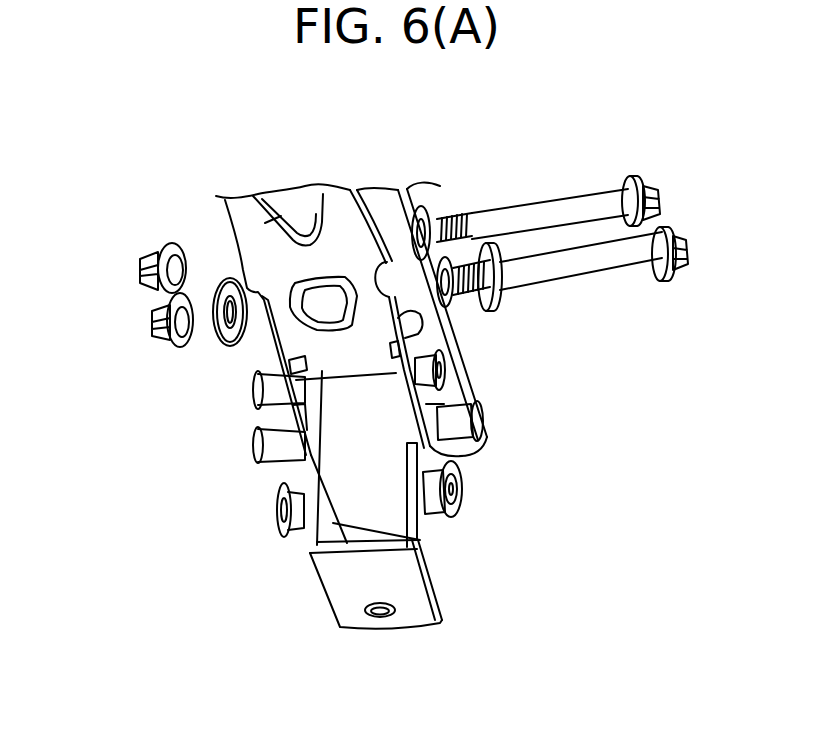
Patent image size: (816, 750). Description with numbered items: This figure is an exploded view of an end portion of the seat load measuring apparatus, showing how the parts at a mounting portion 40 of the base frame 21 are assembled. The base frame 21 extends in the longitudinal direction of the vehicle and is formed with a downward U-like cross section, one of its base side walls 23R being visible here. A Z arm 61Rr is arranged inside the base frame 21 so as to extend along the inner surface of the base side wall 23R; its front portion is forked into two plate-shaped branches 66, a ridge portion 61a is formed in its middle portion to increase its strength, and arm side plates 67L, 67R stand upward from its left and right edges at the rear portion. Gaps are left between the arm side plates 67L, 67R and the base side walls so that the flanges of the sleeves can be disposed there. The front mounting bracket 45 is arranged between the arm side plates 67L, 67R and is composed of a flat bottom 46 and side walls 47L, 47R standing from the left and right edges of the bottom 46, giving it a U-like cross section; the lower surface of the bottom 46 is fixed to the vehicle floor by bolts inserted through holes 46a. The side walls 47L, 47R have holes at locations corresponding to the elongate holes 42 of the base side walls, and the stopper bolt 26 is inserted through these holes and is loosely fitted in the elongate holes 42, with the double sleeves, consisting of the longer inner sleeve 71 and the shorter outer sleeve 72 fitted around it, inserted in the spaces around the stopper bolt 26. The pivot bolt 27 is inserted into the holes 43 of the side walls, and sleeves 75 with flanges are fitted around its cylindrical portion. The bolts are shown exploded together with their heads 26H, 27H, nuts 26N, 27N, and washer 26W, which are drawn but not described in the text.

The base frame 21 is at (438, 186).
The base side wall 23R is at (413, 200).
The stopper bolt 26 is at (616, 268).
The bolt head 26H is at (675, 240).
The nut 26N is at (150, 323).
The washer 26W is at (223, 274).
The pivot bolt 27 is at (582, 195).
The bolt head 27H is at (654, 188).
The nut 27N is at (139, 268).
The mounting portion 40 is at (572, 474).
The elongate hole 42 is at (452, 256).
The hole 43 is at (432, 204).
The front mounting bracket 45 is at (533, 553).
The bottom 46 is at (437, 627).
The hole 46a is at (384, 618).
The side wall 47L is at (447, 556).
The side wall 47R is at (448, 588).
The ridge portion 61a is at (332, 297).
The Z arm 61Rr is at (216, 193).
The branch 66 is at (277, 197).
The arm side plate 67L is at (287, 420).
The arm side plate 67R is at (481, 452).
The inner sleeve 71 is at (253, 467).
The outer sleeve 72 is at (290, 538).
The sleeve 75 is at (257, 400).